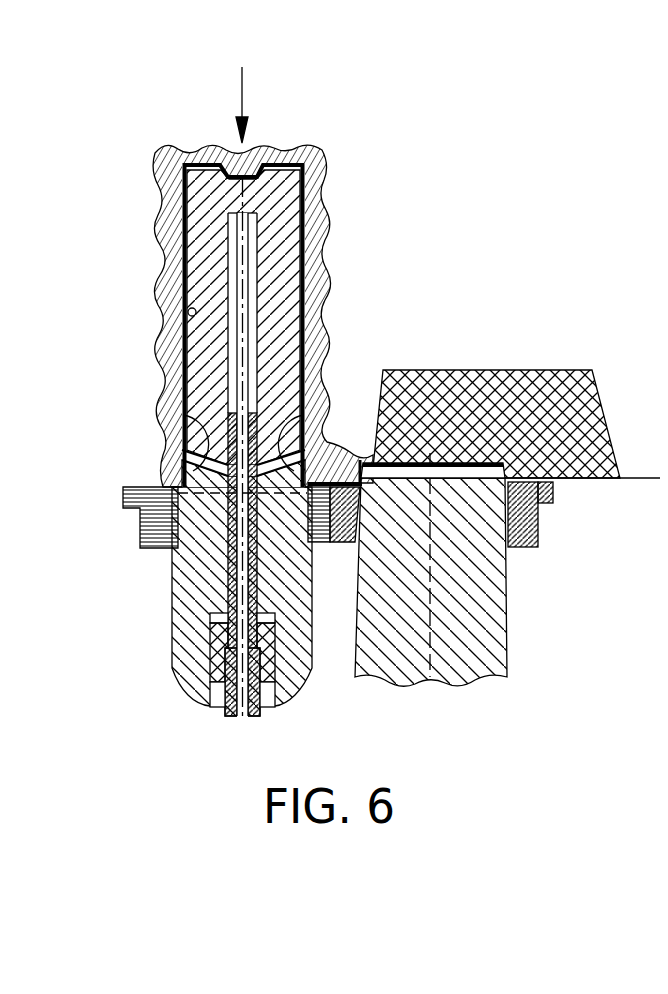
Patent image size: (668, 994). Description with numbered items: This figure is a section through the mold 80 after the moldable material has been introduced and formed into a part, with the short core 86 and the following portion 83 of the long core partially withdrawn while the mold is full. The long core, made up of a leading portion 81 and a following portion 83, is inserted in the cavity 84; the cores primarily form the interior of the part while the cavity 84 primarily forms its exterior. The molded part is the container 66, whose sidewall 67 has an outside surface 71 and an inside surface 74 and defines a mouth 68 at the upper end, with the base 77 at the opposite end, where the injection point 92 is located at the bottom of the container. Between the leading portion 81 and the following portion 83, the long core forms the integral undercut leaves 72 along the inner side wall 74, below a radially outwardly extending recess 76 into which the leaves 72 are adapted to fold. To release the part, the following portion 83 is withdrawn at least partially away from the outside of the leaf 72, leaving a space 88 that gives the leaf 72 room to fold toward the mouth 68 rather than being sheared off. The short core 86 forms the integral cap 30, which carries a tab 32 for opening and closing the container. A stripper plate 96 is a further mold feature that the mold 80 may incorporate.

The injection point 92 is at (241, 135).
The base 77 is at (195, 145).
The container 66 is at (173, 222).
The mold 80 is at (154, 272).
The leading portion 81 is at (290, 263).
The inside surface 74 is at (188, 312).
The sidewall 67 is at (178, 338).
The outside surface 71 is at (174, 370).
The leaves 72 is at (198, 425).
The space 88 is at (182, 448).
The mouth 68 is at (183, 466).
The cavity 84 is at (300, 413).
The recess 76 is at (338, 452).
The cap 30 is at (487, 478).
The stripper plate 96 is at (548, 503).
The tab 32 is at (541, 527).
The following portion 83 is at (188, 632).
The short core 86 is at (497, 620).